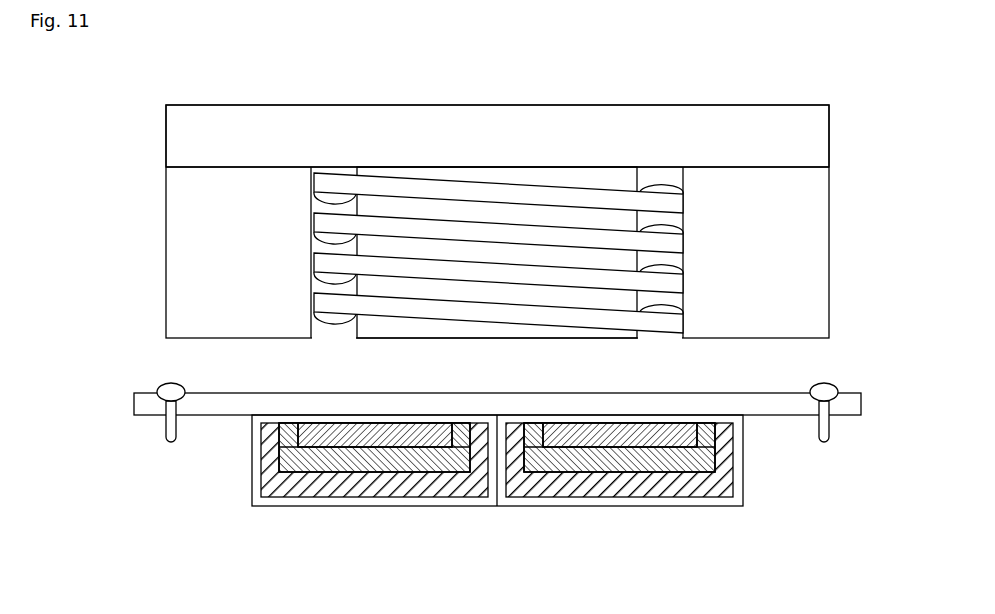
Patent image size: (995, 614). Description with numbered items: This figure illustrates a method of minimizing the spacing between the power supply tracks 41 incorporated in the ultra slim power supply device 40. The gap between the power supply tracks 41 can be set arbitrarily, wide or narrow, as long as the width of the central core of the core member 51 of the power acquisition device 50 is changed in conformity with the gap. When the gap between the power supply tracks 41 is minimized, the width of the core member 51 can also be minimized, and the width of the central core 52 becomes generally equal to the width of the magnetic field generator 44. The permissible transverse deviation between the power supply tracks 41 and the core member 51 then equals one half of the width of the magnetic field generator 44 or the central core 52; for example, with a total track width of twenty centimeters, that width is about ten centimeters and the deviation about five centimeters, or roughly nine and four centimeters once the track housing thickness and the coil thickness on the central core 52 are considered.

The ultra slim power supply device 40 is at (119, 400).
The power supply tracks 41 is at (603, 521).
The magnetic field generator 44 is at (678, 448).
The power acquisition device 50 is at (147, 223).
The core member 51 is at (710, 112).
The central core 52 is at (563, 200).